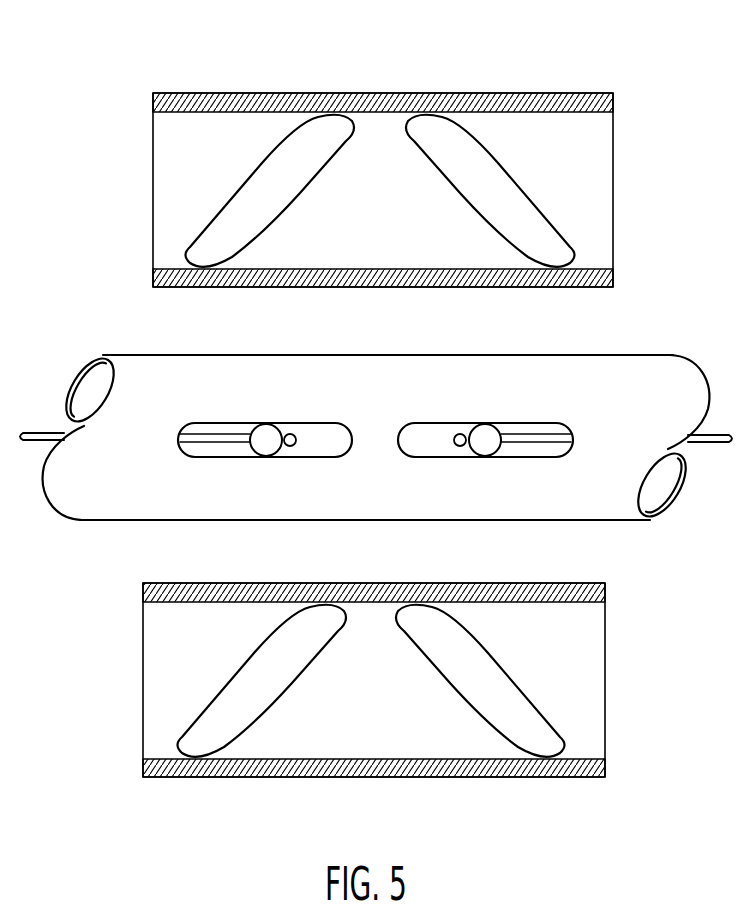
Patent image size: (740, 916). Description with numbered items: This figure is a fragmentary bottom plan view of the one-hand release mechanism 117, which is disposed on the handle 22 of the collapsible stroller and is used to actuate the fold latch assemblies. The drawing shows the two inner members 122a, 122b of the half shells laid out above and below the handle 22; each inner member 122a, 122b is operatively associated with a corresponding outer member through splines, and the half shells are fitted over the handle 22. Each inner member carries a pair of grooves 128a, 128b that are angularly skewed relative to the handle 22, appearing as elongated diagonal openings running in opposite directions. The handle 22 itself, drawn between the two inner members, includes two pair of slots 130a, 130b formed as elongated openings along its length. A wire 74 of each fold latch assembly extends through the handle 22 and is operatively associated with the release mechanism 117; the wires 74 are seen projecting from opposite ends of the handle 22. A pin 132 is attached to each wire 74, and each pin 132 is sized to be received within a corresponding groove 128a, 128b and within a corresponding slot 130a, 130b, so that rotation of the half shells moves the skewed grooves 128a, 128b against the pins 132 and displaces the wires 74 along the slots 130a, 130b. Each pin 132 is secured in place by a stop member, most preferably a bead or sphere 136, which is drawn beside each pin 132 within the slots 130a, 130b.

The one-hand release mechanism 117 is at (126, 74).
The inner member 122a is at (585, 172).
The inner member 122b is at (570, 655).
The groove 128a is at (262, 162).
The groove 128b is at (475, 133).
The handle 22 is at (138, 378).
The wire 74 is at (38, 433).
The slot 130a is at (317, 422).
The slot 130b is at (432, 422).
The pin 132 is at (262, 443).
The bead or sphere 136 is at (295, 445).